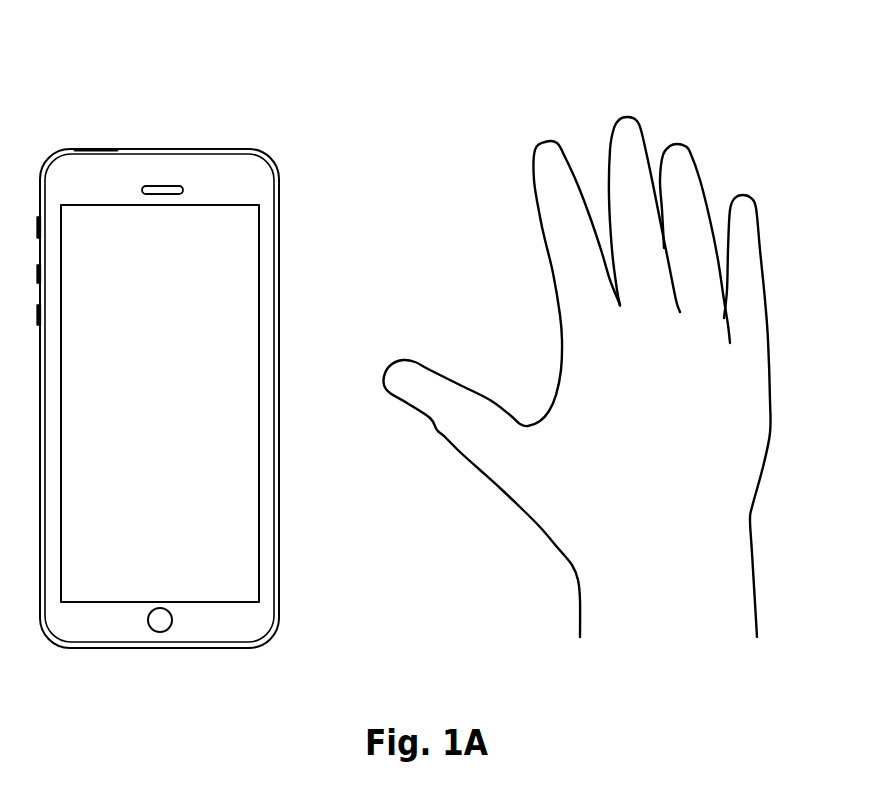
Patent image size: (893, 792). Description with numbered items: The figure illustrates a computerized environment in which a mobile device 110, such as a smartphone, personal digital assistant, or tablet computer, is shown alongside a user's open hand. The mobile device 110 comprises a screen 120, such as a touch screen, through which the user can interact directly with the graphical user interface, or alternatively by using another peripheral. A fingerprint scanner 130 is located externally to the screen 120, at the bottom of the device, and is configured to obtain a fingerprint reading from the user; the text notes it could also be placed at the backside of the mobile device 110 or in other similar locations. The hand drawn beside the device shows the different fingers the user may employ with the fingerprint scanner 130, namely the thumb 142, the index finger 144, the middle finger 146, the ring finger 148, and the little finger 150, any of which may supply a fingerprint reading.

The mobile device 110 is at (280, 221).
The screen 120 is at (248, 311).
The fingerprint scanner 130 is at (160, 632).
The thumb 142 is at (410, 358).
The index finger 144 is at (553, 140).
The middle finger 146 is at (630, 115).
The ring finger 148 is at (681, 142).
The little finger 150 is at (744, 193).